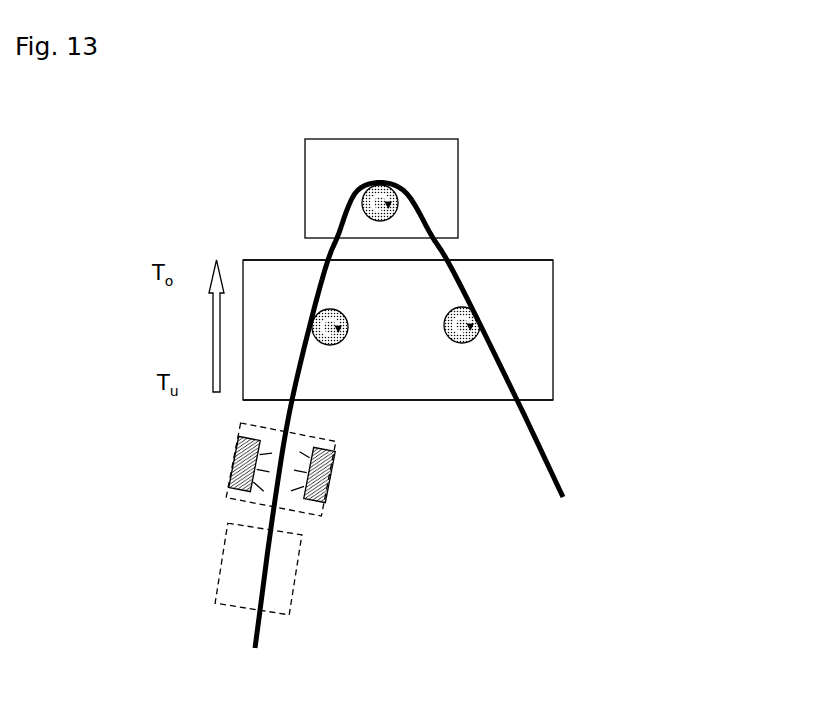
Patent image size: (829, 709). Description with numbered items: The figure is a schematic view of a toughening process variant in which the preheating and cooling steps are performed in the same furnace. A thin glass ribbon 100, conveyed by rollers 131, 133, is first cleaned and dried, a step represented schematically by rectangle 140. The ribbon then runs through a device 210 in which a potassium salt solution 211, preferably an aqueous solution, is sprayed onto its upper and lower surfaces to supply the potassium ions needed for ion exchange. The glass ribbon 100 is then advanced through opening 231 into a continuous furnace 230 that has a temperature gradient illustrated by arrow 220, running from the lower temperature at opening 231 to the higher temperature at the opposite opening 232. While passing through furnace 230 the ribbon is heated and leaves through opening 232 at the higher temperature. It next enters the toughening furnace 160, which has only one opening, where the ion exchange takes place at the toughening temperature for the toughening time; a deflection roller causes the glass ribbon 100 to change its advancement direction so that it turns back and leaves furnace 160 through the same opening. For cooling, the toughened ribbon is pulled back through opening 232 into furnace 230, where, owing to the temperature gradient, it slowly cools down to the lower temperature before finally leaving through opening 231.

The glass ribbon 100 is at (290, 427).
The toughening furnace 160 is at (453, 152).
The continuous furnace 230 is at (553, 347).
The opening 232 is at (553, 262).
The opening 231 is at (553, 400).
The roller 131 is at (362, 199).
The roller 133 is at (451, 343).
The arrow 220 is at (212, 295).
The device 210 is at (235, 450).
The potassium salt solution 211 is at (323, 480).
The rectangle 140 is at (222, 563).